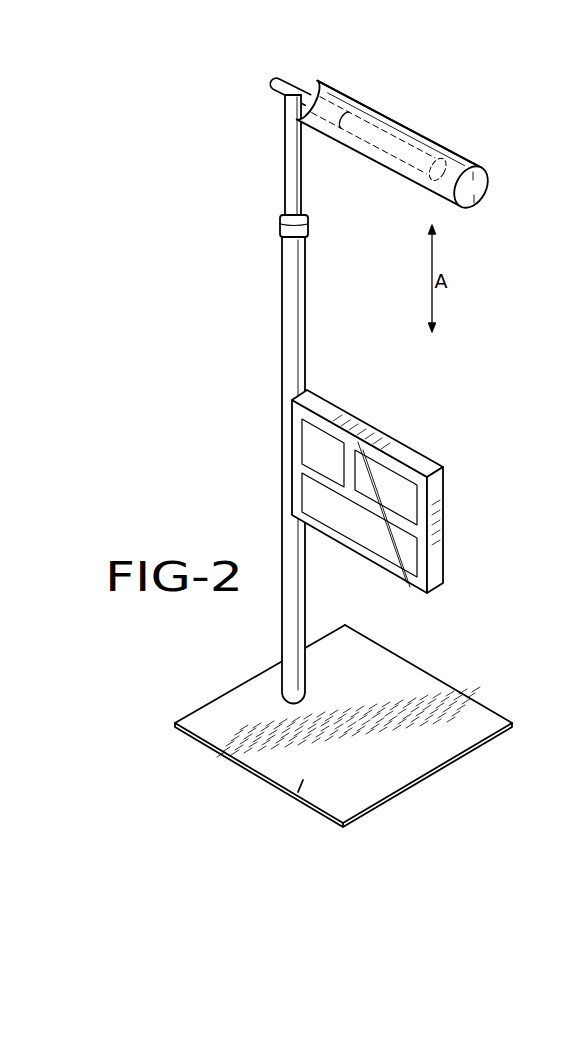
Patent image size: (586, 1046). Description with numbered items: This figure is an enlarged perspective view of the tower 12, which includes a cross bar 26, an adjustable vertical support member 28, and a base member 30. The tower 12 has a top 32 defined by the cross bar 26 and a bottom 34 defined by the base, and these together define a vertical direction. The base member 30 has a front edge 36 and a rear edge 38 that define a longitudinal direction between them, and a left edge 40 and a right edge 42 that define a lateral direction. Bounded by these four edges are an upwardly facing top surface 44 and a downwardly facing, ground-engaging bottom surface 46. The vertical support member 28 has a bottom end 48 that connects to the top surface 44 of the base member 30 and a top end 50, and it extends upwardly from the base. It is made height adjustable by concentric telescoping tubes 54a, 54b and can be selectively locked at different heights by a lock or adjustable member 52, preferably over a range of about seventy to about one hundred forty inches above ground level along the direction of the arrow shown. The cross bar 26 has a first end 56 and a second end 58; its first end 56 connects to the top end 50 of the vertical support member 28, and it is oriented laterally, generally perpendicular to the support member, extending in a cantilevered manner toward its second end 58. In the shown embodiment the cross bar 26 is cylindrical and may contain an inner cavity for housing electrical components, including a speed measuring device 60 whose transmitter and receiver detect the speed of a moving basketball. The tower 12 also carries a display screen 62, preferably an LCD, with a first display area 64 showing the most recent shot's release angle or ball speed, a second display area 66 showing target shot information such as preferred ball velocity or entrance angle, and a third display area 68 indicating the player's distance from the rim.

The tower 12 is at (329, 448).
The cross bar 26 is at (422, 154).
The adjustable vertical support member 28 is at (280, 386).
The base member 30 is at (352, 725).
The top 32 is at (376, 116).
The bottom 34 is at (463, 773).
The front edge 36 is at (445, 682).
The rear edge 38 is at (250, 770).
The left edge 40 is at (257, 675).
The right edge 42 is at (480, 750).
The top surface 44 is at (235, 712).
The bottom surface 46 is at (293, 798).
The bottom end 48 is at (311, 680).
The top end 50 is at (284, 102).
The lock or adjustable member 52 is at (280, 221).
The concentric telescoping tube 54a is at (285, 158).
The concentric telescoping tube 54b is at (282, 335).
The first end 56 is at (280, 81).
The second end 58 is at (473, 203).
The speed measuring device 60 is at (391, 157).
The display screen 62 is at (355, 485).
The first display area 64 is at (400, 487).
The second display area 66 is at (313, 497).
The third display area 68 is at (313, 442).